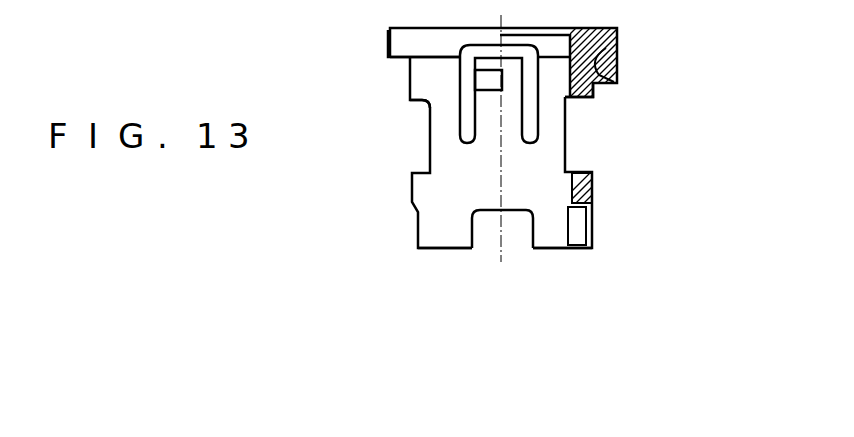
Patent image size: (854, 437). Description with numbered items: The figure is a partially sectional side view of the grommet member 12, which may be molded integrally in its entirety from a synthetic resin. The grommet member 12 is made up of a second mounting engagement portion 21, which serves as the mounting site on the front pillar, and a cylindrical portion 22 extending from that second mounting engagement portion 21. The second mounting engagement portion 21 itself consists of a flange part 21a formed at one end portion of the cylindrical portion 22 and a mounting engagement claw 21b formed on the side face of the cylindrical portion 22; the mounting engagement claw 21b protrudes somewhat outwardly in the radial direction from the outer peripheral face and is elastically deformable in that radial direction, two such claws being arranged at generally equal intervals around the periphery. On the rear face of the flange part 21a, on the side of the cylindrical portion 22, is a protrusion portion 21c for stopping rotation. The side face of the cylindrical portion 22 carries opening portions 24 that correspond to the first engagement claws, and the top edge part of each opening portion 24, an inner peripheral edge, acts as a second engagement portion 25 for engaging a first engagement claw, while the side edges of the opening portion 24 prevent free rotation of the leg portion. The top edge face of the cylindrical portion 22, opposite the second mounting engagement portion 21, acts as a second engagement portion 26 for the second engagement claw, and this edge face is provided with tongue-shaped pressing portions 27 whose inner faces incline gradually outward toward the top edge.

The grommet member 12 is at (678, 62).
The second mounting engagement portion 21 is at (628, 29).
The flange part 21a is at (392, 44).
The mounting engagement claw 21b is at (487, 77).
The protrusion portion 21c is at (613, 77).
The cylindrical portion 22 is at (553, 145).
The opening portion 24 is at (577, 161).
The second engagement portion 25 is at (420, 105).
The second engagement portion 26 is at (513, 210).
The pressing portion 27 is at (435, 240).